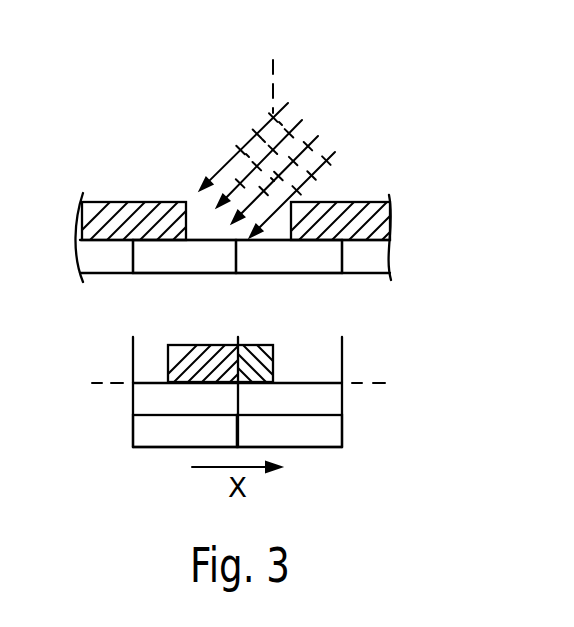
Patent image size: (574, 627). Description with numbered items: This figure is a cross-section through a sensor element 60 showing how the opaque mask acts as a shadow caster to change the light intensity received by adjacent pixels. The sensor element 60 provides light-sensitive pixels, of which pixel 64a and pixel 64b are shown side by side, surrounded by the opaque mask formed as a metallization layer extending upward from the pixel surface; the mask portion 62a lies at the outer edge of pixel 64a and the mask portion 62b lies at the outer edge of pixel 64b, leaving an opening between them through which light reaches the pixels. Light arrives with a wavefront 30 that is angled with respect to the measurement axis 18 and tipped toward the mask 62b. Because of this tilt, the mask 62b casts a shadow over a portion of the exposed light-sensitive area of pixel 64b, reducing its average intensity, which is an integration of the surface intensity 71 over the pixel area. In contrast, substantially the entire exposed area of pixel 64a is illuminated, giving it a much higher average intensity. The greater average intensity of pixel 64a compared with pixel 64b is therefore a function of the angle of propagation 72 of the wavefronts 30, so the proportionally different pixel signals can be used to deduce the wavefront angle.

The measurement axis 18 is at (272, 83).
The wavefront 30 is at (266, 141).
The sensor element 60 is at (212, 146).
The mask 62a is at (148, 203).
The mask 62b is at (348, 203).
The pixel 64a is at (161, 275).
The pixel 64b is at (266, 275).
The surface intensity 71 is at (262, 352).
The angle of propagation 72 is at (311, 145).